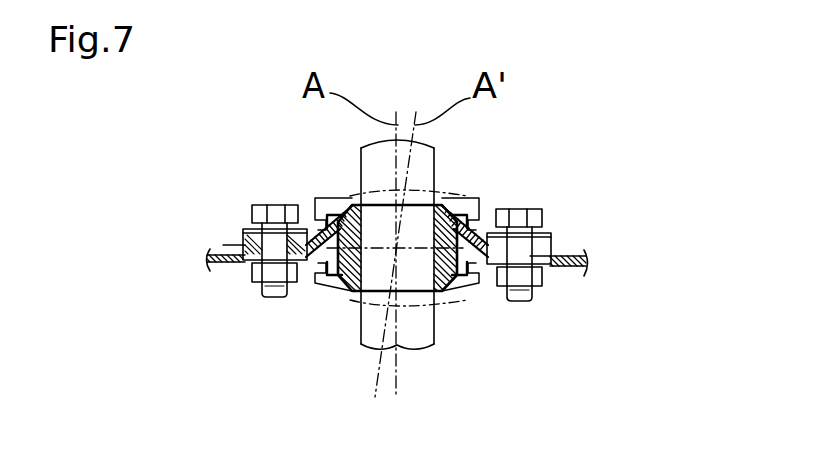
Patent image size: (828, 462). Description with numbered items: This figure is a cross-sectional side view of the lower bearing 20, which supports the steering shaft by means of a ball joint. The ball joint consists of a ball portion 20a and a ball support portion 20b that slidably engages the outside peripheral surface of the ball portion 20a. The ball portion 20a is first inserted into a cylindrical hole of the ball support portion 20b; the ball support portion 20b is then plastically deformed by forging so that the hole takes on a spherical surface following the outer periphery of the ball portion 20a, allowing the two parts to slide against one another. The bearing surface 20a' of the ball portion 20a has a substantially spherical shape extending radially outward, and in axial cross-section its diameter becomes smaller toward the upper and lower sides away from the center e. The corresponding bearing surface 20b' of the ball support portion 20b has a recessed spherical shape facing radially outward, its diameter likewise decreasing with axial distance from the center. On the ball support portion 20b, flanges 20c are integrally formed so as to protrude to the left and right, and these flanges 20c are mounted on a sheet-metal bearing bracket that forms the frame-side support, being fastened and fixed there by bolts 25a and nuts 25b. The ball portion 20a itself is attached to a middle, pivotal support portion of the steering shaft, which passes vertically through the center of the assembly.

The lower bearing 20 is at (318, 186).
The ball portion 20a is at (434, 198).
The bearing surface 20a' is at (500, 294).
The ball support portion 20b is at (446, 217).
The bearing surface 20b' is at (446, 311).
The flange 20c is at (243, 238).
The bolt 25a is at (257, 205).
The nut 25b is at (250, 280).
The center e is at (563, 254).